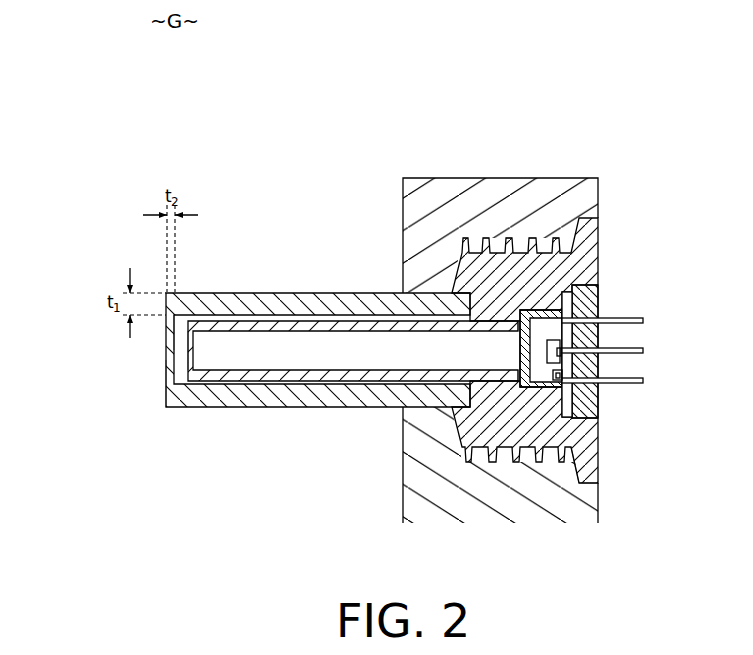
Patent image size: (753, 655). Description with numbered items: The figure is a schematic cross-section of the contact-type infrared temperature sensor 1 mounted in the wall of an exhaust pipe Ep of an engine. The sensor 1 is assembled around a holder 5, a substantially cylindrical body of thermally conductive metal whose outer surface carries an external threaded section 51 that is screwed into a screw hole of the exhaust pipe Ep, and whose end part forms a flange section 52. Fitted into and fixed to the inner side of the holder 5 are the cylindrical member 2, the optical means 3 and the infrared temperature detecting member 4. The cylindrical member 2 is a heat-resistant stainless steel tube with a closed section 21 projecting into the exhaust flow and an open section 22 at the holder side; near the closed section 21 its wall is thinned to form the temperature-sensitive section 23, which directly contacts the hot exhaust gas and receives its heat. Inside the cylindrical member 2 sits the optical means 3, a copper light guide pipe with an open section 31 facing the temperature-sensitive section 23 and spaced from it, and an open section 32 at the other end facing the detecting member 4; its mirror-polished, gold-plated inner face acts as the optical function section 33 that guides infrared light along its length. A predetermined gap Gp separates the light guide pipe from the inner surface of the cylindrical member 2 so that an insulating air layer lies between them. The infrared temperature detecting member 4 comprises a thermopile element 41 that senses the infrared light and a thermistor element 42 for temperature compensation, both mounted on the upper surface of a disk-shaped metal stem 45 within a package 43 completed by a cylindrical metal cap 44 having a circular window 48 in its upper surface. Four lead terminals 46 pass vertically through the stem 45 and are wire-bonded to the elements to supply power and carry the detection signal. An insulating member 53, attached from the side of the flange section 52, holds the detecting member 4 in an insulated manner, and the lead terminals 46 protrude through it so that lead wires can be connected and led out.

The contact-type infrared temperature sensor 1 is at (282, 130).
The cylindrical member 2 is at (248, 298).
The closed section 21 is at (167, 368).
The open section 22 is at (463, 383).
The temperature-sensitive section 23 is at (168, 338).
The optical means 3 is at (280, 372).
The open section 31 is at (195, 352).
The open section 32 is at (512, 382).
The optical function section 33 is at (272, 343).
The infrared temperature detecting member 4 is at (575, 287).
The thermopile element 41 is at (560, 343).
The thermistor element 42 is at (560, 371).
The package 43 is at (540, 312).
The cap 44 is at (523, 315).
The stem 45 is at (565, 395).
The lead terminals 46 is at (626, 320).
The window 48 is at (528, 389).
The holder 5 is at (597, 242).
The external threaded section 51 is at (500, 252).
The flange section 52 is at (590, 470).
The insulating member 53 is at (593, 397).
The exhaust pipe Ep is at (522, 513).
The gap Gp is at (313, 381).